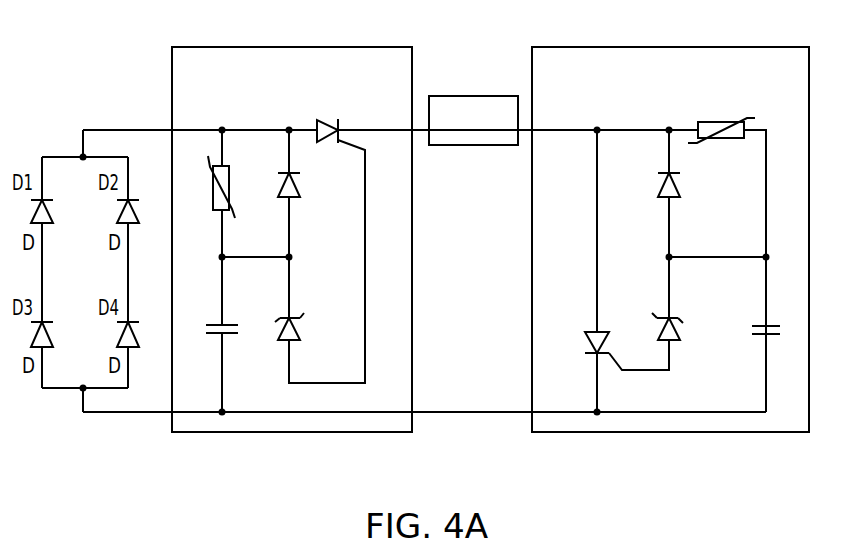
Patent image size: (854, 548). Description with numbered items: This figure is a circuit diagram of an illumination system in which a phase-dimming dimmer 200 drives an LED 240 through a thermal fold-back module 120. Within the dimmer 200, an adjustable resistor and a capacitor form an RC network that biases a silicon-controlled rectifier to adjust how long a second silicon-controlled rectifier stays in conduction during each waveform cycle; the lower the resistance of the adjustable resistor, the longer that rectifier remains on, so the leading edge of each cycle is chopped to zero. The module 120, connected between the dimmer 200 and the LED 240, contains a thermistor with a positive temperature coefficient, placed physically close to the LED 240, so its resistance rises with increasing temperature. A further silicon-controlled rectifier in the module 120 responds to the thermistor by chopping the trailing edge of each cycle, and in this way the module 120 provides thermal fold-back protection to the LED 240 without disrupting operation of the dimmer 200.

The thermal fold-back module 120 is at (292, 47).
The phase-dimming dimmer 200 is at (675, 47).
The LED 240 is at (474, 96).